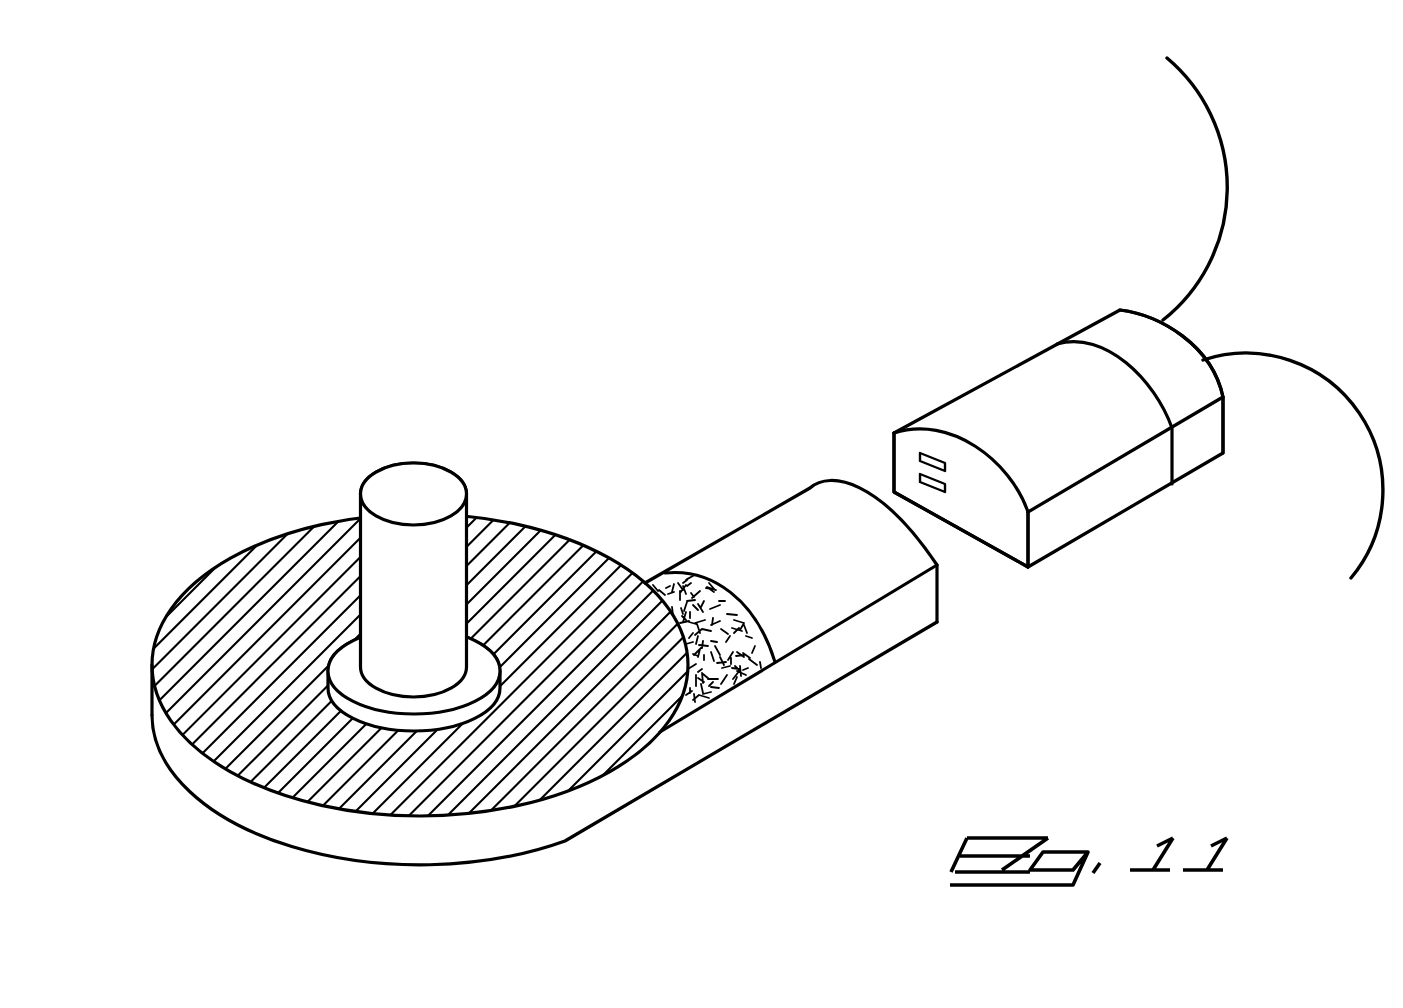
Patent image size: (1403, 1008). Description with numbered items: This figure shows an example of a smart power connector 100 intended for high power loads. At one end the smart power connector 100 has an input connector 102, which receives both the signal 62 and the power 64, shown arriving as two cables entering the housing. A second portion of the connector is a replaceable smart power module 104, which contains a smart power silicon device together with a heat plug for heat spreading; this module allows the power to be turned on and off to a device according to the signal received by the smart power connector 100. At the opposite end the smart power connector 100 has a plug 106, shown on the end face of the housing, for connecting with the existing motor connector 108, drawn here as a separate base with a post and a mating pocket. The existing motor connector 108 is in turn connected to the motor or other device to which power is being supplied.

The smart power connector 100 is at (655, 365).
The input connector 102 is at (1182, 392).
The replaceable smart power module 104 is at (1057, 457).
The plug 106 is at (1007, 532).
The existing motor connector 108 is at (735, 718).
The signal 62 is at (1227, 152).
The power 64 is at (1307, 368).